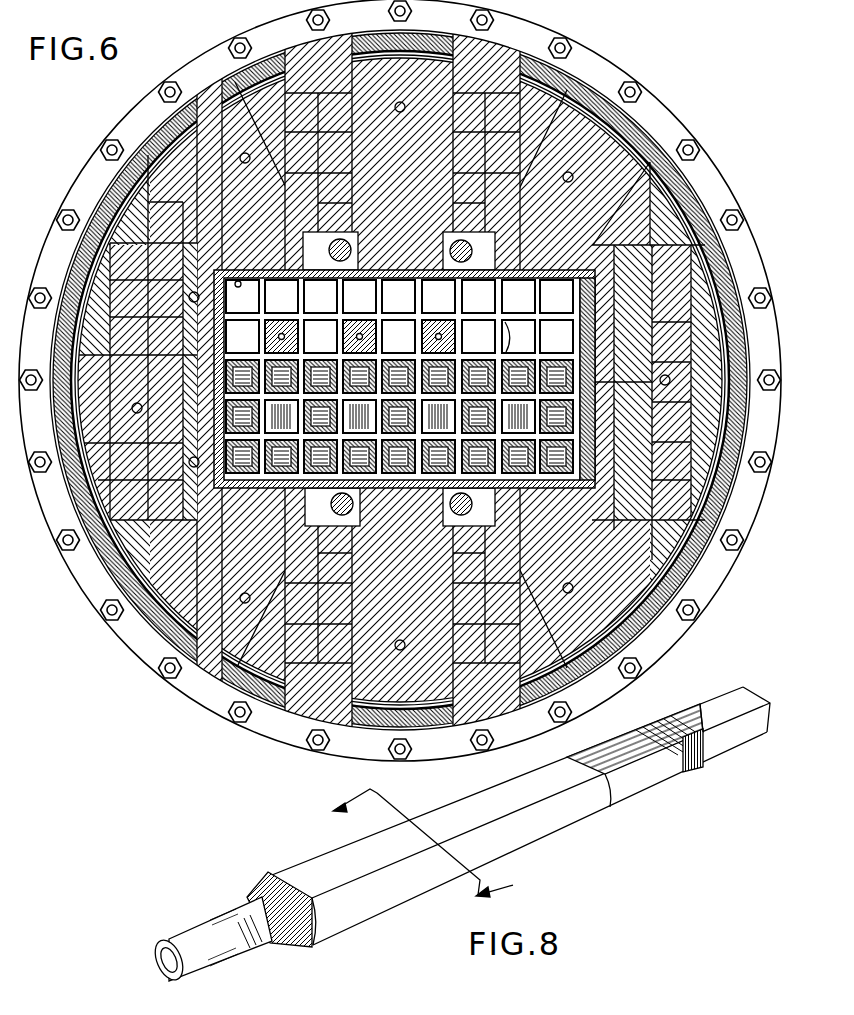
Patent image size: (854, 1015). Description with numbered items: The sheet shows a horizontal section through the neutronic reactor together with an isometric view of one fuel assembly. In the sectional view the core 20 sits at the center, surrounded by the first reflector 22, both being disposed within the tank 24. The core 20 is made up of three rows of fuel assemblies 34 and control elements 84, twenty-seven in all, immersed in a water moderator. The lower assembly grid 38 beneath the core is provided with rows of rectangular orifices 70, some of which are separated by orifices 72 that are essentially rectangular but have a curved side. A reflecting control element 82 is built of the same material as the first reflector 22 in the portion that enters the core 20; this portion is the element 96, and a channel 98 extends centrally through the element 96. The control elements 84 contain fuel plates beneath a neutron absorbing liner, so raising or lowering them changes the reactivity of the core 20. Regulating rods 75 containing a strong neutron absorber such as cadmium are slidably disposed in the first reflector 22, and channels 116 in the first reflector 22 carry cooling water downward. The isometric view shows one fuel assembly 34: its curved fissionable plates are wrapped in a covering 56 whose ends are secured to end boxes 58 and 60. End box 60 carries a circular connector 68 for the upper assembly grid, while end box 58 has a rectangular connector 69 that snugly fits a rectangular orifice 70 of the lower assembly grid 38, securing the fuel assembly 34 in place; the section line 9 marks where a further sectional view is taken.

In FIG. 6, the core 20 is at (593, 370).
In FIG. 6, the first reflector 22 is at (416, 167).
In FIG. 6, the tank 24 is at (598, 88).
In FIG. 6, the fuel assembly 34 is at (362, 510).
In FIG. 8, the fuel assembly 34 is at (544, 834).
In FIG. 6, the lower assembly grid 38 is at (402, 150).
In FIG. 8, the covering 56 is at (358, 926).
In FIG. 8, the end box 58 is at (640, 786).
In FIG. 8, the end box 60 is at (270, 876).
In FIG. 8, the circular connector 68 is at (186, 930).
In FIG. 6, the rectangular connector 69 is at (281, 476).
In FIG. 8, the rectangular connector 69 is at (717, 703).
In FIG. 6, the rectangular orifice 70 is at (516, 478).
In FIG. 6, the orifice 72 is at (241, 282).
In FIG. 6, the regulating rod 75 is at (351, 246).
In FIG. 6, the reflecting control element 82 is at (281, 332).
In FIG. 6, the control element 84 is at (583, 414).
In FIG. 6, the element 96 is at (440, 338).
In FIG. 6, the channel 98 is at (360, 334).
In FIG. 6, the channel 116 is at (241, 154).
In FIG. 8, the section line 9- 9 is at (421, 845).